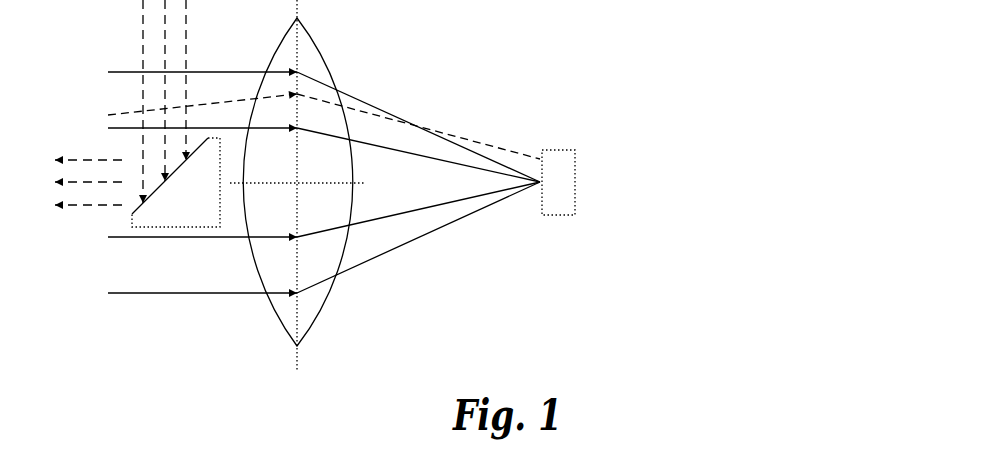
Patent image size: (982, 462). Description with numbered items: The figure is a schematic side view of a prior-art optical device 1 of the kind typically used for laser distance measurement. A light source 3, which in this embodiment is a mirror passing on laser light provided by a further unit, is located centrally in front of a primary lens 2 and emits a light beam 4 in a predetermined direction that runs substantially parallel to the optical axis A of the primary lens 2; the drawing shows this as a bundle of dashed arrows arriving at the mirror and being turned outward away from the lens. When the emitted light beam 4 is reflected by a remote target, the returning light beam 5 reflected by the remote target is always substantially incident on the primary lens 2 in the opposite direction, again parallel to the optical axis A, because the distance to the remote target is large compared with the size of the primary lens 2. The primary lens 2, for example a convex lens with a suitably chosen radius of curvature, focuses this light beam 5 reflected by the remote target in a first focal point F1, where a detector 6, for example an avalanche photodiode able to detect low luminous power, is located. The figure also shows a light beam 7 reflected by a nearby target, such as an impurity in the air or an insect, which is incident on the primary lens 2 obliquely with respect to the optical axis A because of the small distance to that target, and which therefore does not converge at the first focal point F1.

The optical device 1 is at (611, 40).
The primary lens 2 is at (312, 53).
The light source 3 is at (199, 208).
The light beam 4 is at (100, 160).
The light beam reflected by the remote target 5 is at (220, 294).
The detector 6 is at (568, 183).
The light beam reflected by the nearby target 7 is at (478, 142).
The optical axis A is at (285, 183).
The first focal point F1 is at (538, 188).